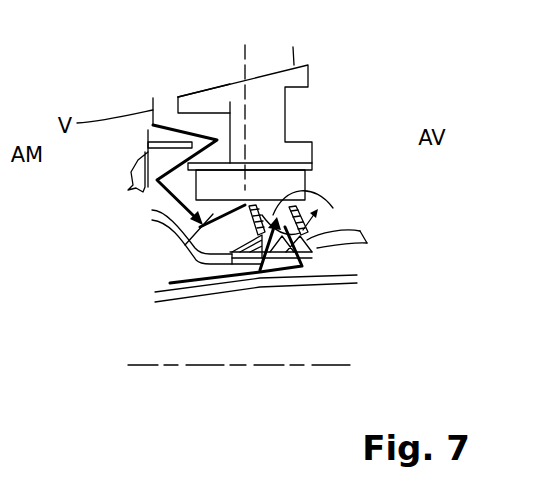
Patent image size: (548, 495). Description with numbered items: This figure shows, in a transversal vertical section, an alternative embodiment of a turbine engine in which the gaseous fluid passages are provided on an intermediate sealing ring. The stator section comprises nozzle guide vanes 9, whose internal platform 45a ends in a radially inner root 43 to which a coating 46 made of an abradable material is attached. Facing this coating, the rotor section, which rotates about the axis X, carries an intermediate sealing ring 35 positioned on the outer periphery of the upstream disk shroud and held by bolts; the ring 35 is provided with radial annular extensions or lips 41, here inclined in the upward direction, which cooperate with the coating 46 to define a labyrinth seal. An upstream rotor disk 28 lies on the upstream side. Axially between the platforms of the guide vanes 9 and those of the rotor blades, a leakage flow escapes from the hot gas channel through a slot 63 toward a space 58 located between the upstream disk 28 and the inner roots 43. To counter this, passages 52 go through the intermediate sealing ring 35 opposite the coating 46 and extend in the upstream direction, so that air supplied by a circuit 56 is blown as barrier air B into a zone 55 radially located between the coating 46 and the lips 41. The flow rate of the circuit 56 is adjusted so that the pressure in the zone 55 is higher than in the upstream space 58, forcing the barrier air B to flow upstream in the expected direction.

The nozzle guide vane 9 is at (307, 36).
The upstream rotor disk 28 is at (128, 175).
The intermediate sealing ring 35 is at (350, 243).
The lip 41 is at (283, 203).
The inner root 43 is at (265, 114).
The internal platform 45a is at (217, 97).
The abradable coating 46 is at (288, 180).
The gaseous fluid passage 52 is at (280, 260).
The zone 55 is at (283, 198).
The circuit 56 is at (220, 244).
The space 58 is at (185, 245).
The slot 63 is at (178, 123).
The barrier air B is at (202, 280).
The axis X is at (160, 366).